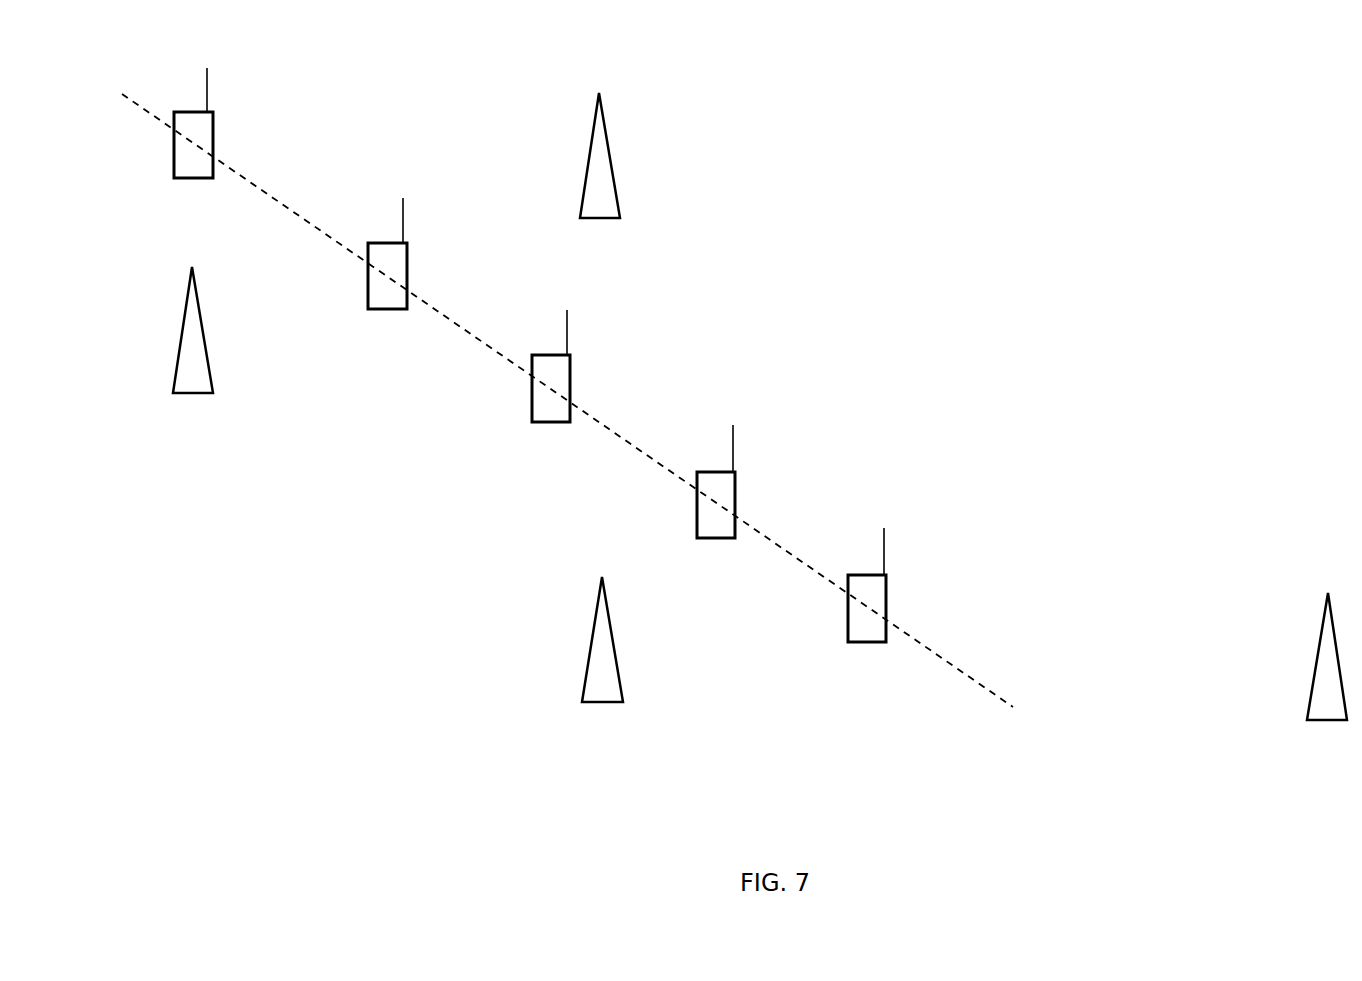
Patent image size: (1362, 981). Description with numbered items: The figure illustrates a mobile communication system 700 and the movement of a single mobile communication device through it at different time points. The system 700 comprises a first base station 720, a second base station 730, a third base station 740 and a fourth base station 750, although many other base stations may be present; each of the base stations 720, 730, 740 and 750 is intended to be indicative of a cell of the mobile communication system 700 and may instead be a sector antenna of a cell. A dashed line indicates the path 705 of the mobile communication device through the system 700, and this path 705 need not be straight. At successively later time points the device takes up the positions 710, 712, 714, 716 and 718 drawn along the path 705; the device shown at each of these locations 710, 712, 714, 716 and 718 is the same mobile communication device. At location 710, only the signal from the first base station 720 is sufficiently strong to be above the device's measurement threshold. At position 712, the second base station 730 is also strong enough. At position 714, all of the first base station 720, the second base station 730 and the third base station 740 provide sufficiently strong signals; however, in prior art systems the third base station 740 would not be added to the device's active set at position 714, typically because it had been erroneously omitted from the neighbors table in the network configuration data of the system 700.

The mobile communication system 700 is at (957, 134).
The path of a mobile communication device 705 is at (1000, 705).
The position of the mobile communication device 710 is at (211, 127).
The position of the mobile communication device 712 is at (407, 258).
The position of the mobile communication device 714 is at (571, 368).
The position of the mobile communication device 716 is at (735, 485).
The position of the mobile communication device 718 is at (887, 588).
The base station BS1 720 is at (209, 343).
The base station BS2 730 is at (610, 153).
The base station BS3 740 is at (583, 655).
The base station BS4 750 is at (1318, 657).